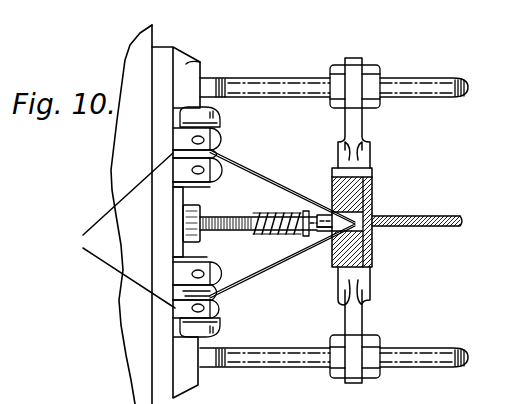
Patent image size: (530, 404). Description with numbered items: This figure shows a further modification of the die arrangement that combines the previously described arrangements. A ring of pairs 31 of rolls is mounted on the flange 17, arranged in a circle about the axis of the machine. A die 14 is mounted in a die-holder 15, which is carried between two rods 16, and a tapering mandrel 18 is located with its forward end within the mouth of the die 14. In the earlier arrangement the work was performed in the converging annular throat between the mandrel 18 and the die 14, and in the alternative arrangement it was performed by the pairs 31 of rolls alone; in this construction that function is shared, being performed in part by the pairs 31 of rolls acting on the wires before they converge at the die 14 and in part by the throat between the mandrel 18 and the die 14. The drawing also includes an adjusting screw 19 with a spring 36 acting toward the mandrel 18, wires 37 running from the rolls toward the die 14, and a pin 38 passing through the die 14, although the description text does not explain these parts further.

The die 14 is at (365, 192).
The die-holder 15 is at (355, 125).
The rods 16 is at (279, 84).
The flange 17 is at (158, 58).
The tapering mandrel 18 is at (317, 235).
The adjusting screw 19 is at (235, 232).
The pairs of rolls 31 is at (119, 230).
The spring 36 is at (281, 214).
The wires 37 is at (303, 217).
The pin 38 is at (317, 213).